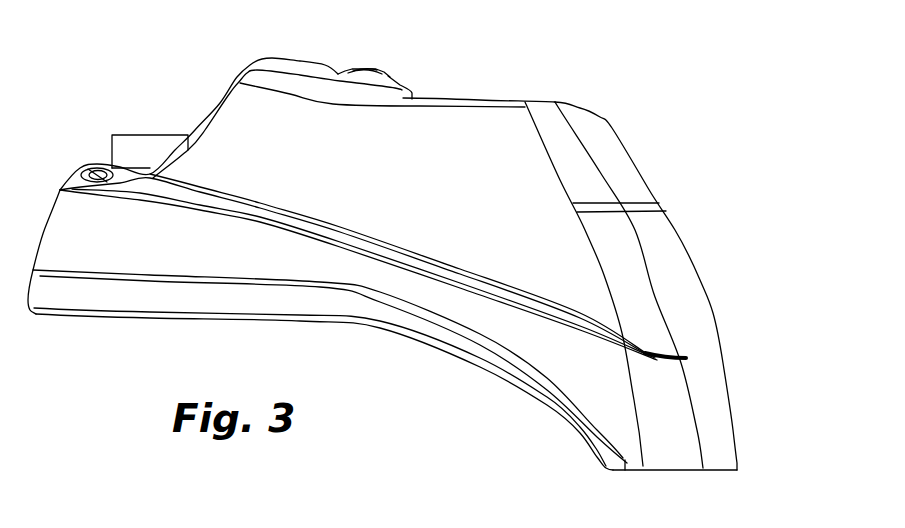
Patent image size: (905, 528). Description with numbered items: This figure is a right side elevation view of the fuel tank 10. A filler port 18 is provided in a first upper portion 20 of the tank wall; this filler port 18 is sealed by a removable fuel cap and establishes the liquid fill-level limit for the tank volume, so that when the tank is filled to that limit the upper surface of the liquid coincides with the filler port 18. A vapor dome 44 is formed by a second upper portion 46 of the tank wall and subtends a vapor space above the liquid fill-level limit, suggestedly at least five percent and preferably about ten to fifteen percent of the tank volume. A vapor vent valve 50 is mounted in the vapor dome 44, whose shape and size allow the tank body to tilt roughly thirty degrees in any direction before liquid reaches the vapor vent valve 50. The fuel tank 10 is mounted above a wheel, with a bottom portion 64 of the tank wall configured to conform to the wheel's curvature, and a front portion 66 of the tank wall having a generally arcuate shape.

The fuel tank 10 is at (688, 155).
The filler port 18 is at (143, 135).
The first upper portion 20 is at (93, 157).
The vapor dome 44 is at (533, 102).
The second upper portion 46 is at (440, 90).
The vapor vent valve 50 is at (373, 68).
The bottom portion 64 is at (484, 368).
The front portion 66 is at (712, 314).